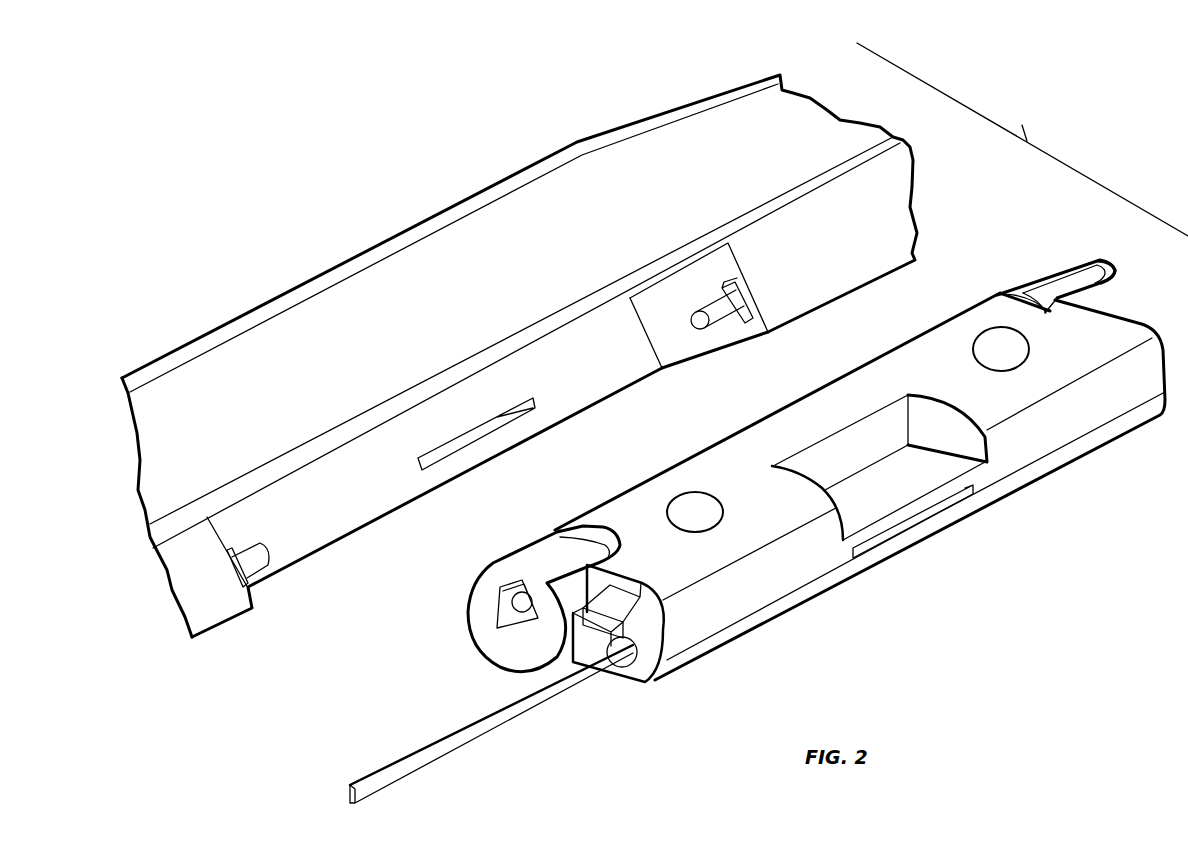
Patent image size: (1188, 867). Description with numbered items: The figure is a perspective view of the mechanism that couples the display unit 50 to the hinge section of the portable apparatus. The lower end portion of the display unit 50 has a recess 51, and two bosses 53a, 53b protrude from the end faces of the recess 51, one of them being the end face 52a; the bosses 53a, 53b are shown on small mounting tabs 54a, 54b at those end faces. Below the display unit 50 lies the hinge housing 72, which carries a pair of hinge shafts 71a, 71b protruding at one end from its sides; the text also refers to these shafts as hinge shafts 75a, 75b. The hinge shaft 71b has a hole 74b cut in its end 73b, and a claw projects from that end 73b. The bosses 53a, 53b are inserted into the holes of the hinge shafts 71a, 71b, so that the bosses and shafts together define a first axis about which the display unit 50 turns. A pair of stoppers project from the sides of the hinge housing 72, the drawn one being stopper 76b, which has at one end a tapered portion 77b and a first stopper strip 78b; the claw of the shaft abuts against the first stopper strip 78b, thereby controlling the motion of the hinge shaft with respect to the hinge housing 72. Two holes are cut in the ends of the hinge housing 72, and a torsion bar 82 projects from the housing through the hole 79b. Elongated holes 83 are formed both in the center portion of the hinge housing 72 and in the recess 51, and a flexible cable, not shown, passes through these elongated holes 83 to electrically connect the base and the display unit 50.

The display unit 50 is at (425, 241).
The recess 51 is at (378, 508).
The end face 52a is at (715, 347).
The boss 53a is at (728, 312).
The pin mounting tab 54a is at (746, 322).
The boss 53b is at (269, 556).
The pin mounting tab 54b is at (233, 555).
The elongated hole 83 is at (450, 447).
The hinge housing 72 is at (815, 570).
The hinge shaft 71a is at (1027, 283).
The hinge shaft 75a is at (1102, 262).
The hinge shaft 71b is at (523, 548).
The hinge shaft 75b is at (563, 524).
The end 73b is at (468, 617).
The hole 74b is at (503, 628).
The stopper 76b is at (632, 625).
The tapered portion 77b is at (663, 610).
The first stopper strip 78b is at (612, 613).
The hole 79b is at (622, 667).
The torsion bar 82 is at (517, 712).